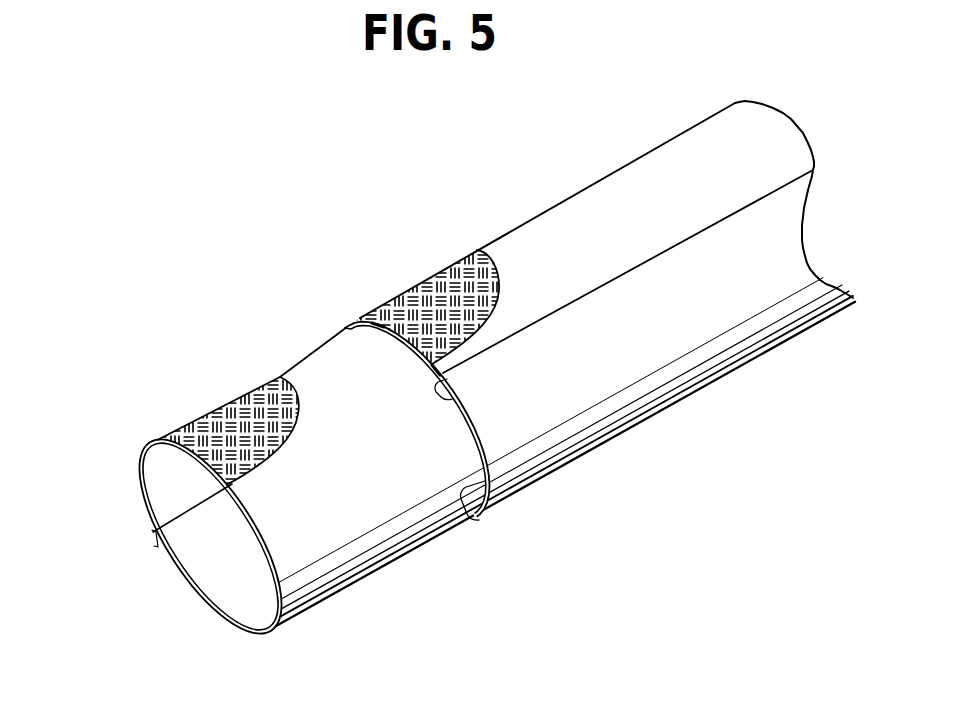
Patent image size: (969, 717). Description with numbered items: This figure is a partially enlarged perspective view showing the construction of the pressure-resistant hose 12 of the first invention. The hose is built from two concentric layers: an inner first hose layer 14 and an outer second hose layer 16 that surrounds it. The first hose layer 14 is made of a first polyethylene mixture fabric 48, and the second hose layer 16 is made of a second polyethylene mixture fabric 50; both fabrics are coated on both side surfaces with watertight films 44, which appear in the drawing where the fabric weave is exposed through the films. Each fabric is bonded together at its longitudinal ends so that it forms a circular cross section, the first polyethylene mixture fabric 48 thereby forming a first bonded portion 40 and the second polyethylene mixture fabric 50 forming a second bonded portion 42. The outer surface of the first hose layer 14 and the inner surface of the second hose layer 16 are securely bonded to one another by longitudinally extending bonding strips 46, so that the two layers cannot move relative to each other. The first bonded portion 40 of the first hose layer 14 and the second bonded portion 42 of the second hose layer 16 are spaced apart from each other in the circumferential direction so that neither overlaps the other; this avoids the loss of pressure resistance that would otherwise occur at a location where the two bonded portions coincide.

The pressure-resistant hose 12 is at (425, 243).
The first hose layer 14 is at (378, 552).
The second hose layer 16 is at (590, 433).
The first bonded portion 40 is at (150, 543).
The second bonded portion 42 is at (452, 390).
The watertight films 44 is at (474, 250).
The bonding strips 46 is at (481, 516).
The first polyethylene mixture fabric 48 is at (202, 412).
The second polyethylene mixture fabric 50 is at (402, 283).